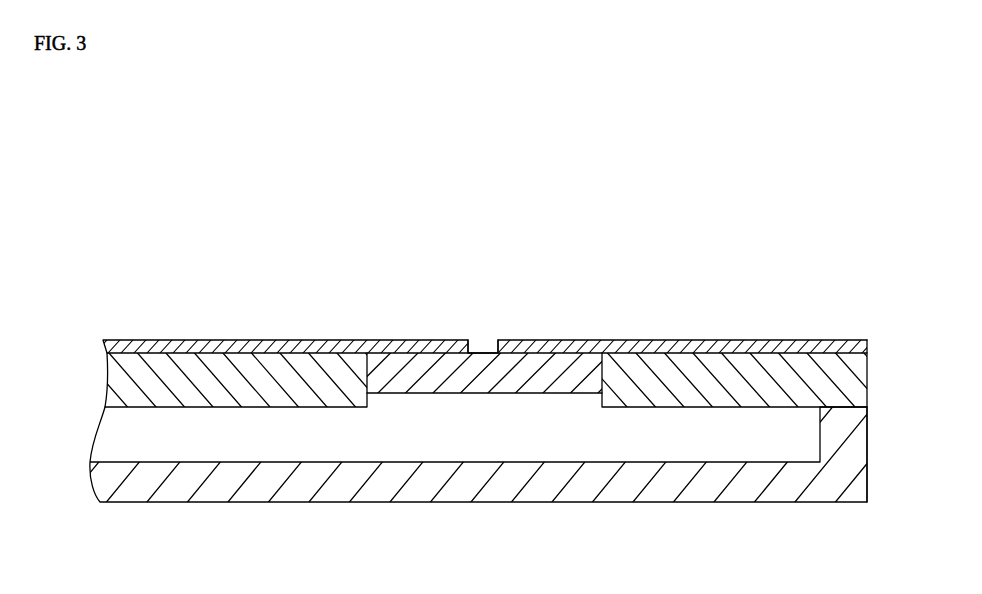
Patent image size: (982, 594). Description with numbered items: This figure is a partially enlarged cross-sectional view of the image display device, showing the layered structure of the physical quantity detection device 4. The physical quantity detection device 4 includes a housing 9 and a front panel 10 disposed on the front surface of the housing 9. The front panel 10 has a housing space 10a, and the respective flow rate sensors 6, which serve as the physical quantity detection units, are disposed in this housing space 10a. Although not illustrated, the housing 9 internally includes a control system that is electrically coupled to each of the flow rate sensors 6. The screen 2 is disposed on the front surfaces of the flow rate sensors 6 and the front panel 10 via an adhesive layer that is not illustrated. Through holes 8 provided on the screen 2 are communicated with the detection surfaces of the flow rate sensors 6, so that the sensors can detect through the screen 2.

The screen 2 is at (240, 340).
The physical quantity detection device 4 is at (879, 428).
The flow rate sensor 6 is at (430, 390).
The through hole 8 is at (485, 353).
The housing 9 is at (853, 457).
The front panel 10 is at (857, 380).
The housing space 10a is at (545, 403).